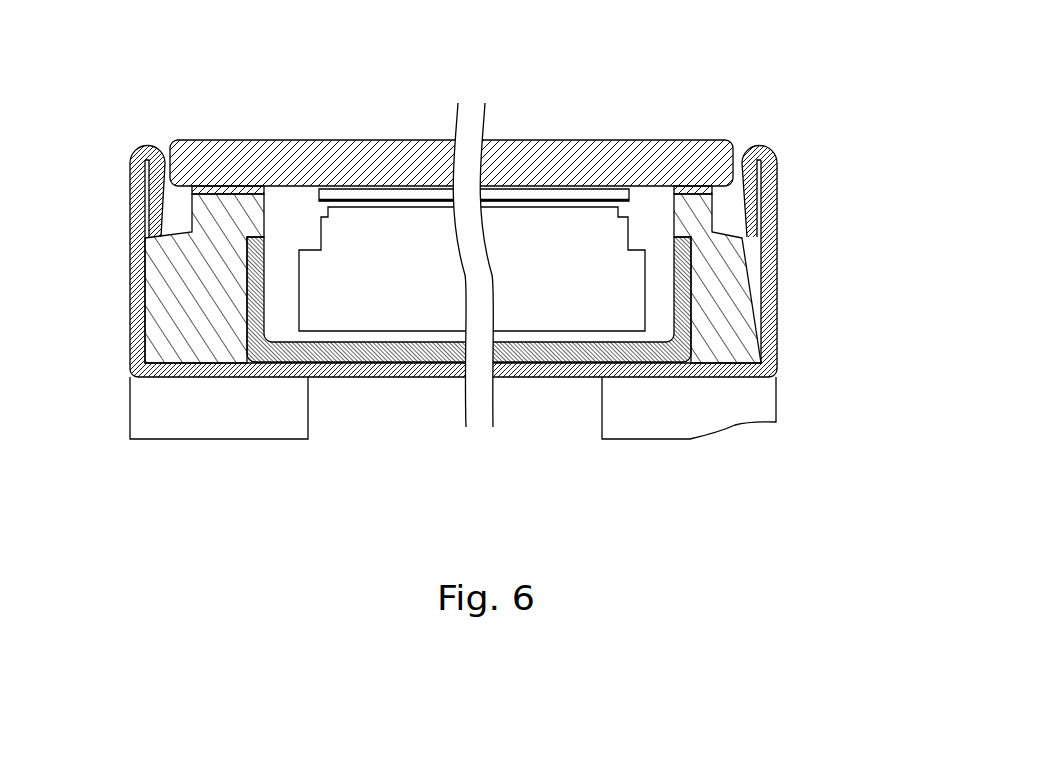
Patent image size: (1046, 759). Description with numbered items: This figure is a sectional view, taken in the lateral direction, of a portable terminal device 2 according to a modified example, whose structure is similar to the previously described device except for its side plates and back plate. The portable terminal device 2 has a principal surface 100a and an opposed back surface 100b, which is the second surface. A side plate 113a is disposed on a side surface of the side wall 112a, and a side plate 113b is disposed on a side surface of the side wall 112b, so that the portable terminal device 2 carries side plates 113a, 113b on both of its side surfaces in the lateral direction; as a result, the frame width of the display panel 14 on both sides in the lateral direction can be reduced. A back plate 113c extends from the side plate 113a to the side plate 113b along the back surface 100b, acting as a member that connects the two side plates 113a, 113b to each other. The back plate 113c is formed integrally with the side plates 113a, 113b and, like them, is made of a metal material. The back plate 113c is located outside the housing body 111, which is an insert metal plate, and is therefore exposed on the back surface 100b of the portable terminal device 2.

The portable terminal device 2 is at (461, 253).
The display panel 14 is at (451, 124).
The principal surface 100a is at (293, 140).
The back surface 100b is at (372, 378).
The housing body 111 is at (562, 378).
The side wall 112a is at (736, 314).
The side wall 112b is at (148, 331).
The side plate 113a is at (773, 263).
The side plate 113b is at (135, 283).
The back plate 113c is at (450, 377).